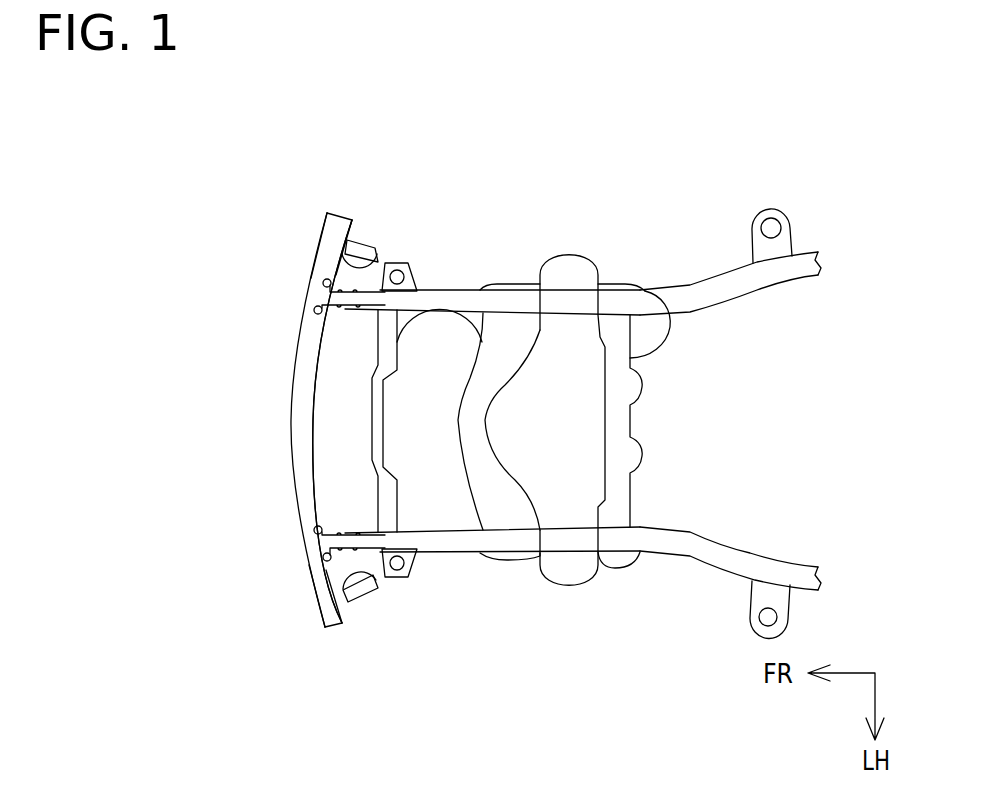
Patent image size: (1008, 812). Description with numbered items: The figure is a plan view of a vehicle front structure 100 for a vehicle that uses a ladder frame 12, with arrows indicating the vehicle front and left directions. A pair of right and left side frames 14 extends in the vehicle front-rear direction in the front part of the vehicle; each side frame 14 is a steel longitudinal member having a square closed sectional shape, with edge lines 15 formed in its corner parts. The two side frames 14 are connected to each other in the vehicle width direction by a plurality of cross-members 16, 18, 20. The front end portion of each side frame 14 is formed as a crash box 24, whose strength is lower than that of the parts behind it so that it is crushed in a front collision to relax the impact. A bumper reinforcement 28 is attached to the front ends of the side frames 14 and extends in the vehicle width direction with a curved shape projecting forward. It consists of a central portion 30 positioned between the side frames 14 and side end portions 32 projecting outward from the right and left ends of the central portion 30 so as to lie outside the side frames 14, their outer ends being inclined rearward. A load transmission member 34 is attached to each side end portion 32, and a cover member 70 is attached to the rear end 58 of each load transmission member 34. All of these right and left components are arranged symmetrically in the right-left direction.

The vehicle front structure 100 is at (613, 152).
The ladder frame 12 is at (721, 248).
The side frame 14 is at (447, 290).
The edge line 15 is at (465, 290).
The cross-member 16 is at (412, 262).
The cross-member 18 is at (473, 290).
The cross-member 20 is at (648, 282).
The crash box 24 is at (347, 310).
The bumper reinforcement 28 is at (281, 413).
The central portion 30 is at (292, 443).
The side end portion 32 is at (318, 268).
The load transmission member 34 is at (378, 250).
The rear end 58 is at (396, 262).
The cover member 70 is at (346, 250).